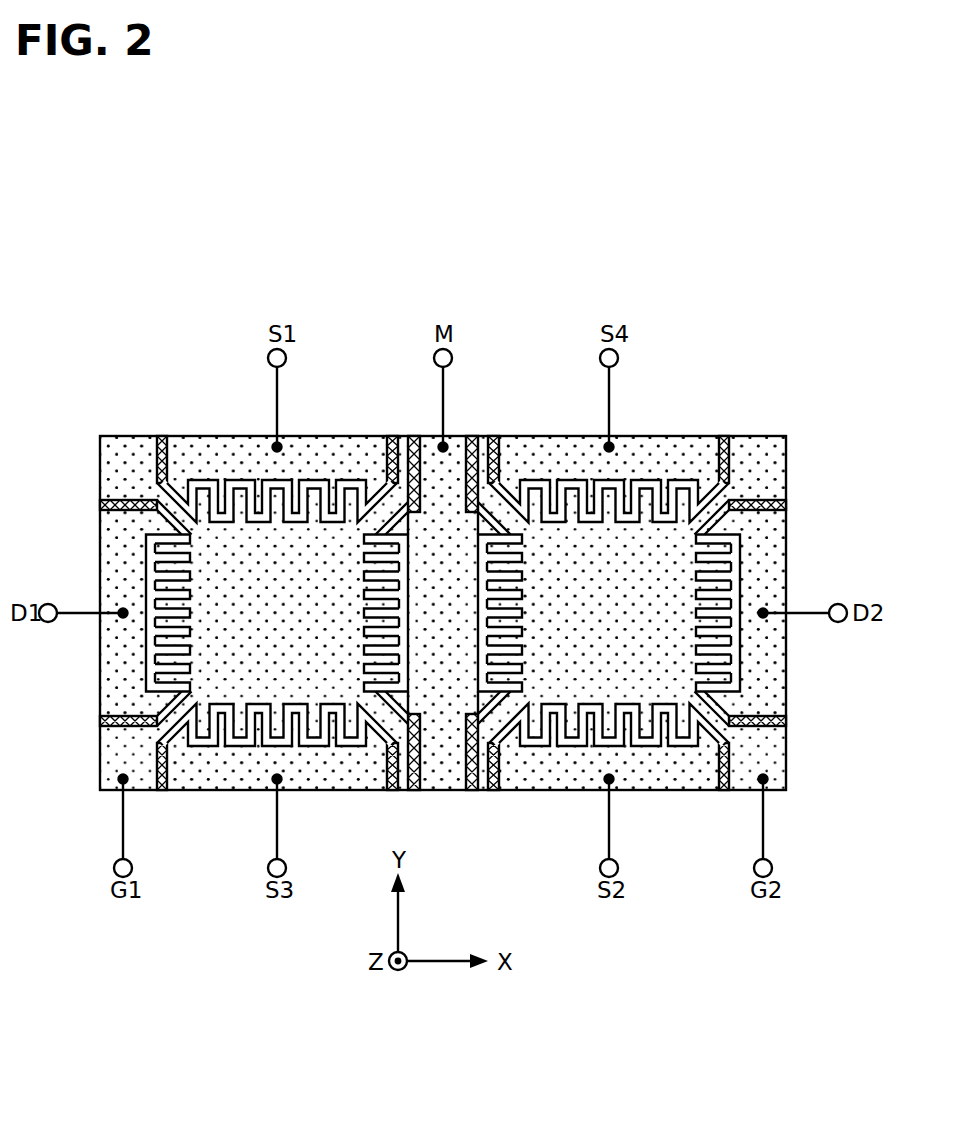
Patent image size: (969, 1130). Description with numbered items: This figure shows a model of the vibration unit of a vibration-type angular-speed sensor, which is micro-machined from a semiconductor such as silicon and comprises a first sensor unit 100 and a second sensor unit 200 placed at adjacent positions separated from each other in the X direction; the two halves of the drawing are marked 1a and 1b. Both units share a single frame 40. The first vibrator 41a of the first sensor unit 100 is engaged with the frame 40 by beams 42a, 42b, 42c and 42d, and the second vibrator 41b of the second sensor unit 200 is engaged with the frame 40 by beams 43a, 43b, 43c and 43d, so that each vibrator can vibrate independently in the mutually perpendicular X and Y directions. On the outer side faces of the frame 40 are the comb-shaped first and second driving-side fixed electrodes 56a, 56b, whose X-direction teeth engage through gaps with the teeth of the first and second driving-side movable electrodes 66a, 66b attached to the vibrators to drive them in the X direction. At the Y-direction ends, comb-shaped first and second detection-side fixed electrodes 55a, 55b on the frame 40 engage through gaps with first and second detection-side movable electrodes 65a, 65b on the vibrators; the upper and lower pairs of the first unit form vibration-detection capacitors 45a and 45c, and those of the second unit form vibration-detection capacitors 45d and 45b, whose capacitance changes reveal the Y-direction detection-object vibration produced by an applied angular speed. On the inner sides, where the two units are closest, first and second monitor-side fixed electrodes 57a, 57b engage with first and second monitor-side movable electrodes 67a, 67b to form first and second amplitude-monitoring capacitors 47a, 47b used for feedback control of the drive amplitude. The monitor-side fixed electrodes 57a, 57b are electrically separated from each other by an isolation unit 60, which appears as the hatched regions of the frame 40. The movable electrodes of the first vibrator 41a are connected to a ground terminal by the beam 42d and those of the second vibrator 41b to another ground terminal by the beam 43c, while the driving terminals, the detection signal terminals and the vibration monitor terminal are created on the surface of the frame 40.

The first sensor unit 100 is at (210, 408).
The second sensor unit 200 is at (676, 408).
The isolation unit 60 is at (104, 503).
The frame 40 is at (440, 790).
The first vibrator 41a is at (322, 600).
The second vibrator 41b is at (607, 600).
The beam 42a is at (183, 520).
The beam 42b is at (368, 520).
The beam 42c is at (366, 707).
The beam 42d is at (188, 707).
The beam 43a is at (518, 520).
The beam 43b is at (703, 520).
The beam 43c is at (698, 707).
The beam 43d is at (553, 690).
The vibration-detection capacitor 45a is at (305, 438).
The vibration-detection capacitor 45b is at (521, 791).
The vibration-detection capacitor 45c is at (204, 791).
The vibration-detection capacitor 45d is at (633, 438).
The first amplitude-monitoring capacitor 47a is at (350, 656).
The second amplitude-monitoring capacitor 47b is at (536, 656).
The first detection-side fixed electrode 55a is at (323, 480).
The second detection-side fixed electrode 55b is at (565, 480).
The first driving-side fixed electrode 56a is at (147, 655).
The second driving-side fixed electrode 56b is at (739, 655).
The first monitor-side fixed electrode 57a is at (410, 560).
The second monitor-side fixed electrode 57b is at (477, 680).
The first detection-side movable electrode 65a is at (265, 522).
The second detection-side movable electrode 65b is at (621, 522).
The first driving-side movable electrode 66a is at (186, 575).
The second driving-side movable electrode 66b is at (700, 575).
The first monitor-side movable electrode 67a is at (364, 608).
The second monitor-side movable electrode 67b is at (522, 608).
The first semiconductor element 1a is at (138, 704).
The second semiconductor element 1b is at (748, 704).